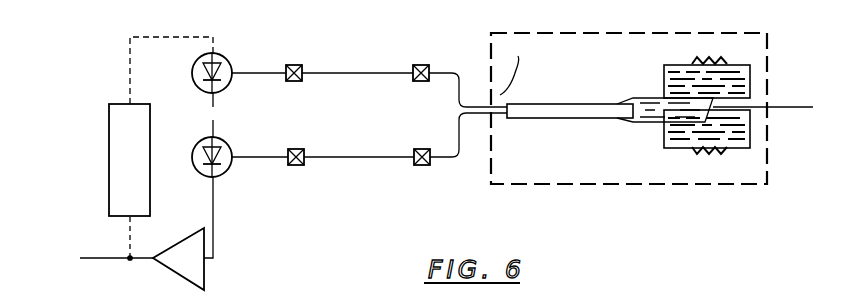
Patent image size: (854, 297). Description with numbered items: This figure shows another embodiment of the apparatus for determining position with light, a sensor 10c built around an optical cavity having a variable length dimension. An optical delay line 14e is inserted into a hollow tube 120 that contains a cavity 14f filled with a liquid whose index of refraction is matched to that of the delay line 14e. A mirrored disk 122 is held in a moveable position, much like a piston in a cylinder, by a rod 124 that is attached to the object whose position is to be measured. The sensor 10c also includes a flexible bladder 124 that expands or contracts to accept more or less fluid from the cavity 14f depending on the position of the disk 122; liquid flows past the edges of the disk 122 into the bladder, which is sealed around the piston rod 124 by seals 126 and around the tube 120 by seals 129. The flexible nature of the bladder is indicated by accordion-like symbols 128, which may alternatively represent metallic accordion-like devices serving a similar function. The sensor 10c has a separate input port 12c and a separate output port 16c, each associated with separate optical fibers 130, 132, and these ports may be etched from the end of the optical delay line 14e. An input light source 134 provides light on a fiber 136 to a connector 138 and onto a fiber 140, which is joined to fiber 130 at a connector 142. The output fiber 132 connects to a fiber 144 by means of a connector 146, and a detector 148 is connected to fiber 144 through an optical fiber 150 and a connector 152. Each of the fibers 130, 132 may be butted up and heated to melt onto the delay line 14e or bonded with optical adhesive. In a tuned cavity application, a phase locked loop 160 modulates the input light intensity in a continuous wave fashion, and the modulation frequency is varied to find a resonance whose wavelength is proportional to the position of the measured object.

The sensor 10c is at (543, 33).
The input port 12c is at (497, 106).
The optical delay line 14e is at (566, 102).
The cavity 14f is at (665, 110).
The output port 16c is at (497, 114).
The hollow tube 120 is at (638, 97).
The mirrored disk 122 is at (714, 152).
The rod 124 is at (756, 47).
The seals 126 is at (750, 100).
The accordion-like symbols 128 is at (712, 62).
The seals 129 is at (664, 124).
The optical fiber 130 is at (455, 70).
The output fiber 132 is at (459, 158).
The input light source 134 is at (216, 55).
The fiber 136 is at (254, 70).
The connector 138 is at (297, 64).
The fiber 140 is at (360, 71).
The connector 142 is at (421, 64).
The fiber 144 is at (360, 159).
The connector 146 is at (428, 149).
The detector 148 is at (225, 172).
The optical fiber 150 is at (262, 159).
The connector 152 is at (304, 149).
The phase locked loop 160 is at (115, 104).